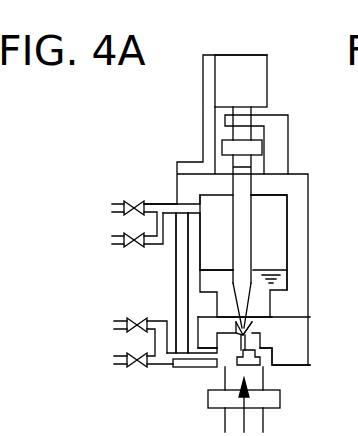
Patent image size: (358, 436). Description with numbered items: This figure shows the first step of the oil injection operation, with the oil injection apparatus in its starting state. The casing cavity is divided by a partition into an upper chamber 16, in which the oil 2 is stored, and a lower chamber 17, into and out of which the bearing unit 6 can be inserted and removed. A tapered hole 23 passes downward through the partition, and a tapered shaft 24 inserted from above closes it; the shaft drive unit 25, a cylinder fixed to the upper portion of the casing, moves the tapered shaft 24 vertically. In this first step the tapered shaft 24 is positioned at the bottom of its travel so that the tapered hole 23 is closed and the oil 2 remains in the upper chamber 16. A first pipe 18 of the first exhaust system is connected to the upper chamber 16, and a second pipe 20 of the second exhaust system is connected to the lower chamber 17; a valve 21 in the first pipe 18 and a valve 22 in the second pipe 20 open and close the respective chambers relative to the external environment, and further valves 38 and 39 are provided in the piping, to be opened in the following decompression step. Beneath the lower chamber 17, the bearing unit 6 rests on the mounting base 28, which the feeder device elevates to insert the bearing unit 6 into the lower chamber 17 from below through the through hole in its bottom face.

The oil 2 is at (219, 270).
The bearing unit 6 is at (263, 360).
The upper chamber 16 is at (282, 245).
The lower chamber 17 is at (280, 333).
The first pipe 18 is at (171, 202).
The second pipe 20 is at (174, 369).
The valve 21 is at (129, 243).
The valve 22 is at (137, 317).
The tapered hole 23 is at (258, 309).
The tapered shaft 24 is at (250, 213).
The shaft drive unit 25 is at (263, 78).
The mounting base 28 is at (282, 403).
The valve 38 is at (131, 200).
The valve 39 is at (134, 368).